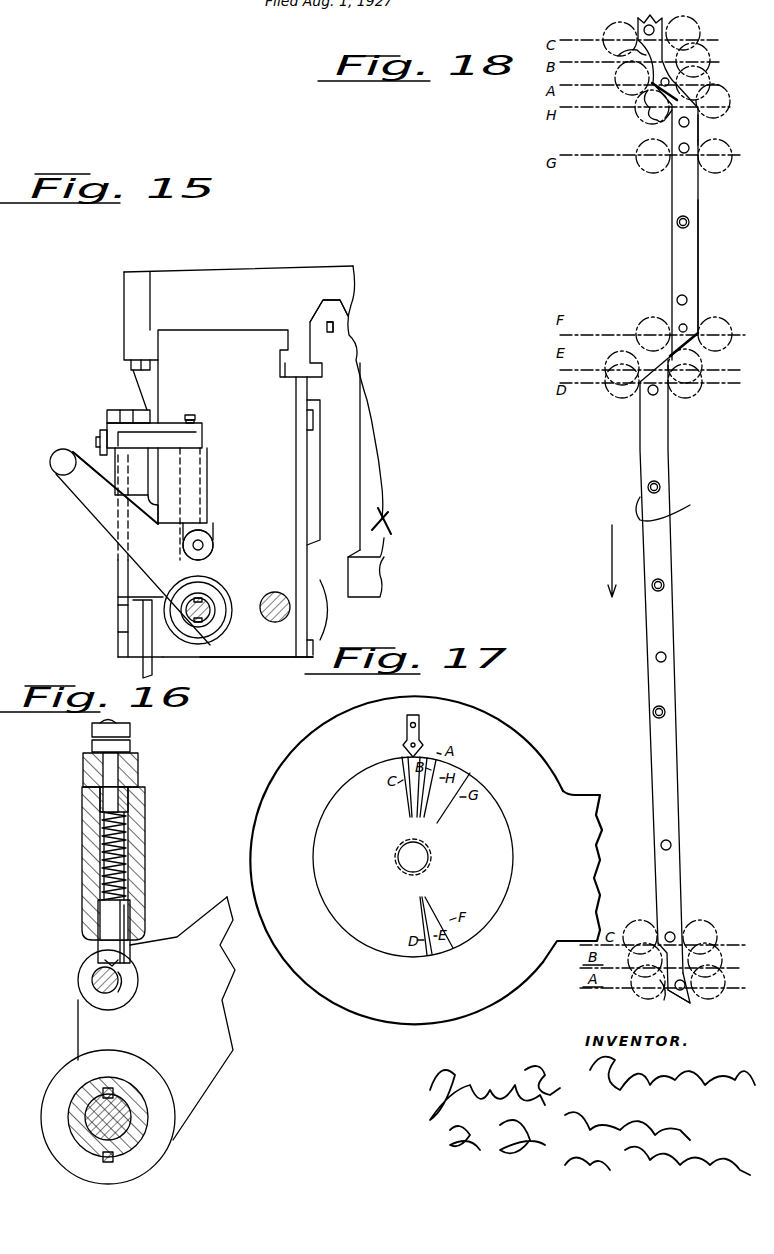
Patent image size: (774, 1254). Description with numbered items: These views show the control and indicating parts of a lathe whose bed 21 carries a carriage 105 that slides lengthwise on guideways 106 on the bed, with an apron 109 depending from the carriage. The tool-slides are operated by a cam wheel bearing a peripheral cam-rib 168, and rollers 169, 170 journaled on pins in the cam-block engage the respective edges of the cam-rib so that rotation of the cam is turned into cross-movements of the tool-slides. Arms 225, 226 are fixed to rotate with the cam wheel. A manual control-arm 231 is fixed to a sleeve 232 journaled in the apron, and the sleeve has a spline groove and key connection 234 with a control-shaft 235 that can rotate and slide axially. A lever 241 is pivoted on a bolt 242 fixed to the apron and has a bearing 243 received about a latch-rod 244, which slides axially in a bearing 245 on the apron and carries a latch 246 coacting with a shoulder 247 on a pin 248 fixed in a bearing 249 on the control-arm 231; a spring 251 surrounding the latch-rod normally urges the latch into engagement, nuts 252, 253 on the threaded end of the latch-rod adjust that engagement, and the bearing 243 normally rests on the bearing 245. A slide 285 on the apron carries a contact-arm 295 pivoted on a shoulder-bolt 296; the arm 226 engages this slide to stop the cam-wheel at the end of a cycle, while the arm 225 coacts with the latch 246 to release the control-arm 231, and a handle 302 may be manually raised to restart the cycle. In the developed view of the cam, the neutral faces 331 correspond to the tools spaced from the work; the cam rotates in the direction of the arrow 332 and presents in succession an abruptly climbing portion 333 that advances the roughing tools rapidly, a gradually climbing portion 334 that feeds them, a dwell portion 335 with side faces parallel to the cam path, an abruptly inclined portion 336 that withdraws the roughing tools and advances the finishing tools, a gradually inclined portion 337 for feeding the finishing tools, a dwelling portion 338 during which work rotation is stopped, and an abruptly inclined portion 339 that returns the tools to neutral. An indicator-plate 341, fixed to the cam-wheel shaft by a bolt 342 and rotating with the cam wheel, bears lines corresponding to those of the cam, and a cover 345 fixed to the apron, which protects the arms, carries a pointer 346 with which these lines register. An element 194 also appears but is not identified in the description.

In FIG. 15, the bed 21 is at (379, 431).
In FIG. 15, the carriage 105 is at (344, 300).
In FIG. 15, the guideways 106 is at (335, 322).
In FIG. 15, the apron 109 is at (262, 657).
In FIG. 18, the peripheral cam-rib 168 is at (665, 565).
In FIG. 18, the roller 169 is at (620, 400).
In FIG. 18, the roller 170 is at (683, 398).
In FIG. 15, the shaft 194 is at (275, 622).
In FIG. 15, the arm 225 is at (108, 410).
In FIG. 15, the arm 226 is at (118, 583).
In FIG. 15, the manual control-arm 231 is at (108, 541).
In FIG. 16, the manual control-arm 231 is at (205, 1095).
In FIG. 16, the sleeve 232 is at (135, 1095).
In FIG. 16, the spline groove and key connection 234 is at (118, 1082).
In FIG. 15, the control-shaft 235 is at (210, 620).
In FIG. 16, the control-shaft 235 is at (125, 1125).
In FIG. 15, the lever 241 is at (100, 458).
In FIG. 15, the bolt 242 is at (100, 430).
In FIG. 15, the bearing 243 is at (202, 440).
In FIG. 16, the bearing 243 is at (138, 770).
In FIG. 15, the latch-rod 244 is at (210, 535).
In FIG. 16, the latch-rod 244 is at (130, 905).
In FIG. 15, the bearing 245 is at (207, 465).
In FIG. 16, the bearing 245 is at (145, 855).
In FIG. 16, the latch 246 is at (118, 963).
In FIG. 16, the shoulder 247 is at (118, 978).
In FIG. 15, the pin 248 is at (203, 545).
In FIG. 16, the pin 248 is at (122, 990).
In FIG. 15, the bearing 249 is at (210, 553).
In FIG. 16, the bearing 249 is at (125, 1000).
In FIG. 16, the spring 251 is at (127, 835).
In FIG. 15, the nut 252 is at (196, 423).
In FIG. 16, the nut 252 is at (130, 746).
In FIG. 15, the nut 253 is at (195, 416).
In FIG. 16, the nut 253 is at (130, 730).
In FIG. 15, the slide 285 is at (140, 637).
In FIG. 15, the contact-arm 295 is at (118, 610).
In FIG. 15, the shoulder-bolt 296 is at (118, 636).
In FIG. 15, the handle 302 is at (60, 466).
In FIG. 18, the neutral faces 331 is at (645, 92).
In FIG. 18, the arrow 332 is at (610, 577).
In FIG. 18, the abruptly climbing portion 333 is at (625, 58).
In FIG. 18, the gradually climbing portion 334 is at (672, 500).
In FIG. 18, the dwell portion 335 is at (658, 398).
In FIG. 18, the abruptly inclined portion 336 is at (690, 342).
In FIG. 18, the gradually inclined portion 337 is at (698, 280).
In FIG. 18, the dwelling portion 338 is at (700, 132).
In FIG. 18, the abruptly inclined portion 339 is at (650, 118).
In FIG. 17, the indicator-plate 341 is at (512, 830).
In FIG. 17, the bolt 342 is at (405, 870).
In FIG. 17, the cover 345 is at (540, 748).
In FIG. 17, the pointer 346 is at (418, 735).